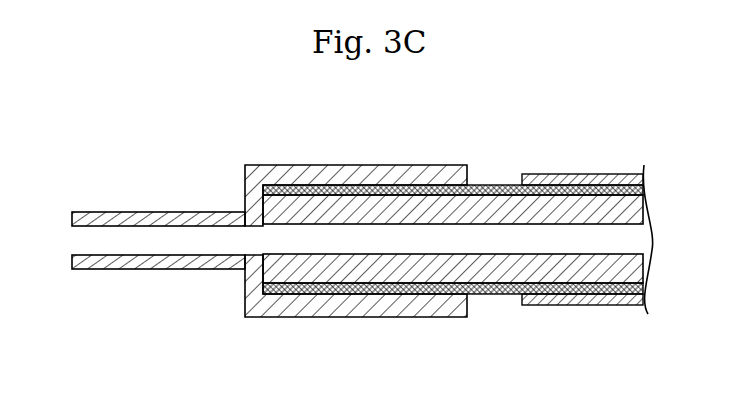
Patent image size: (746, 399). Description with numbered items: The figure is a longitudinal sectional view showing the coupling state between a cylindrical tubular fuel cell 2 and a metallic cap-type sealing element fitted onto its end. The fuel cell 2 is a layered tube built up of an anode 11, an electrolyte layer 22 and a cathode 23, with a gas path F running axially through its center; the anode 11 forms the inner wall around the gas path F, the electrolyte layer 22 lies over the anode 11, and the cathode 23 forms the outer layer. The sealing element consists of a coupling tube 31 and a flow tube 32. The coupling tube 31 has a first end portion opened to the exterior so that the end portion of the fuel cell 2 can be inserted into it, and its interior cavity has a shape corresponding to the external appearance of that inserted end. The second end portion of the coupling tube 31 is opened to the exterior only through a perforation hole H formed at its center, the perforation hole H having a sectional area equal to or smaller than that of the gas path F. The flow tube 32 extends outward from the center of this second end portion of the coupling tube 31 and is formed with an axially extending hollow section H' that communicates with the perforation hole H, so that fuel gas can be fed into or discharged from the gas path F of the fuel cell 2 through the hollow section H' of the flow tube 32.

The fuel cell 2 is at (616, 308).
The anode 11 is at (485, 210).
The electrolyte layer 22 is at (500, 185).
The cathode 23 is at (578, 178).
The coupling tube 31 is at (313, 317).
The flow tube 32 is at (125, 269).
The gas path F is at (477, 240).
The perforation hole H is at (199, 188).
The hollow section H' is at (84, 189).